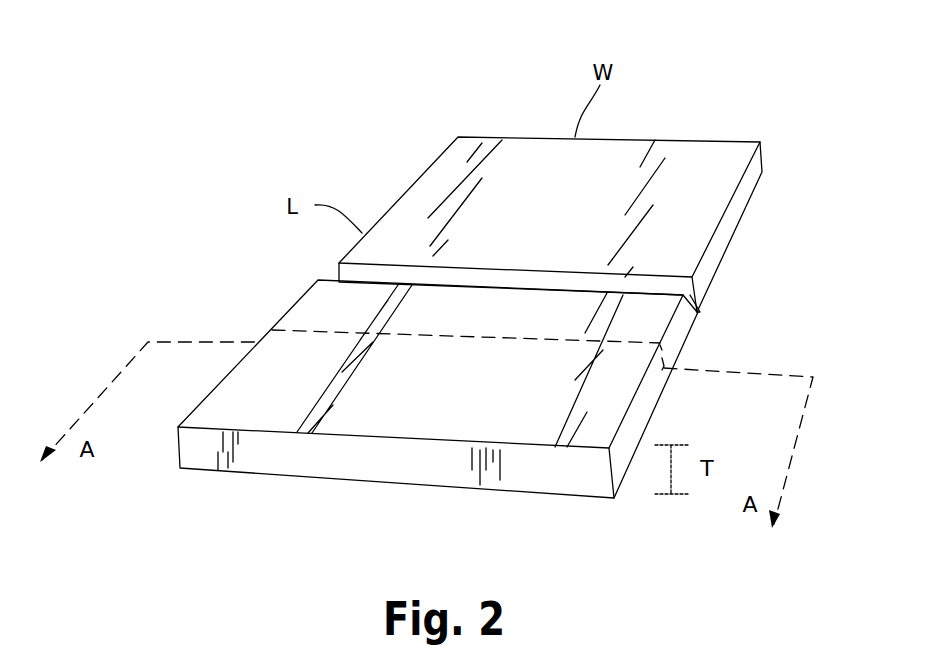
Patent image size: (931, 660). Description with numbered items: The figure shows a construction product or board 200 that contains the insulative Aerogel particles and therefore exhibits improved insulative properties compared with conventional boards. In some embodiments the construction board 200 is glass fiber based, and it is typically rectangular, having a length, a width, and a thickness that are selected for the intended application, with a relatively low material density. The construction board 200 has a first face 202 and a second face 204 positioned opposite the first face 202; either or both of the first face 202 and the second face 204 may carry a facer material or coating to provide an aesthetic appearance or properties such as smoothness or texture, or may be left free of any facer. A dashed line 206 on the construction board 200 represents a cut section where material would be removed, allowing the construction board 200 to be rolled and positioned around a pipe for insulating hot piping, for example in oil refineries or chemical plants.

The construction board 200 is at (782, 105).
The first face 202 is at (435, 182).
The second face 204 is at (592, 498).
The dashed line 206 is at (698, 293).